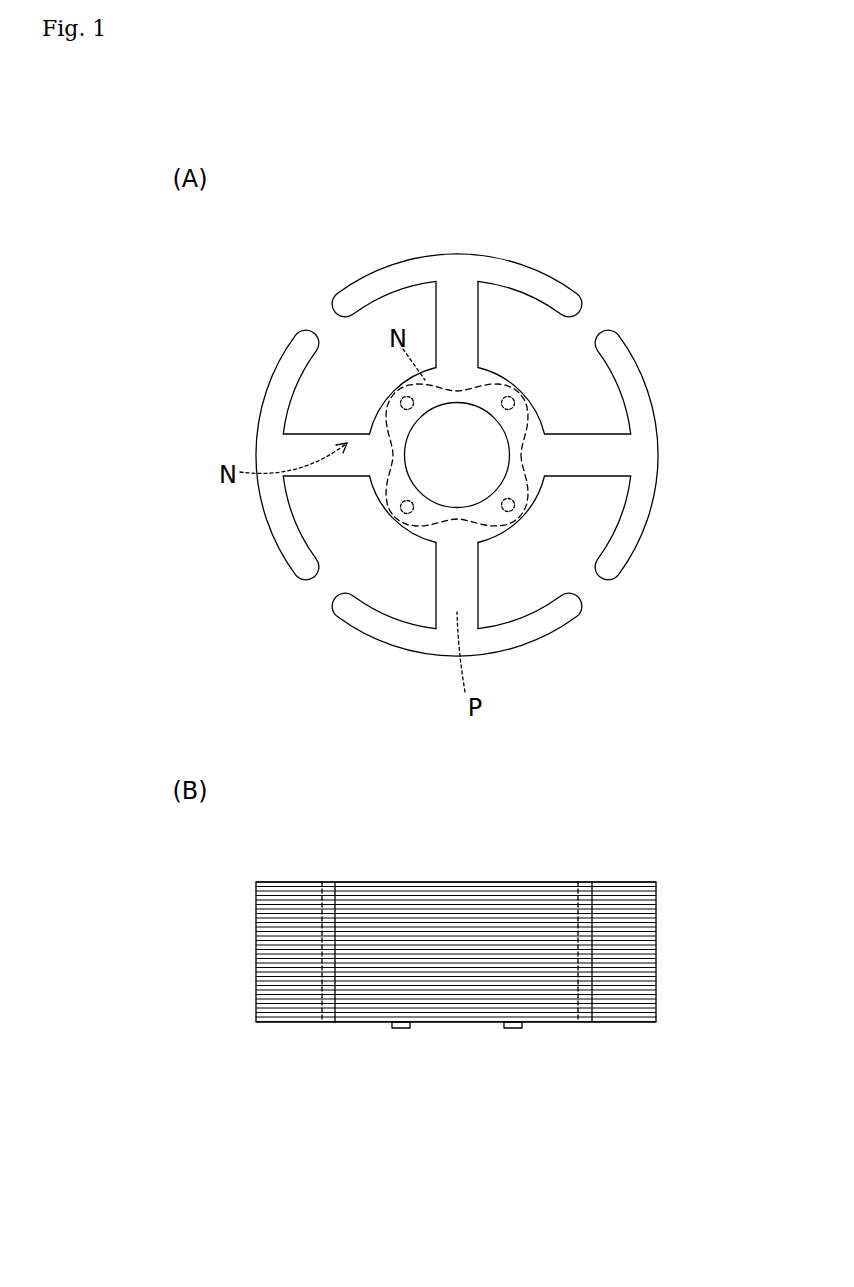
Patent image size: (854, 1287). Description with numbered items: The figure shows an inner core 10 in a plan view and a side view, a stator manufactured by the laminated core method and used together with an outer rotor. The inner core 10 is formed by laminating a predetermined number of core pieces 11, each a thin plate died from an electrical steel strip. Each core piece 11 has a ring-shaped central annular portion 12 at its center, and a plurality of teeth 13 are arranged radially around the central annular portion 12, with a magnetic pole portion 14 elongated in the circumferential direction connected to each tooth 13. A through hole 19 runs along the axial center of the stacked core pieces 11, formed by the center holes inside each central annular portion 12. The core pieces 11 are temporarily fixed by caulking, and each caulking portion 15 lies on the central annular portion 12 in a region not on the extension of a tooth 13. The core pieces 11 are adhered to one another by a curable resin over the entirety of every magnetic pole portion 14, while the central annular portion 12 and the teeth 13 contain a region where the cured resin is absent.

The inner core 10 is at (477, 662).
The core piece 11 is at (477, 662).
The central annular portion 12 is at (515, 542).
The teeth 13 is at (442, 305).
The magnetic pole portion 14 is at (478, 283).
The caulking portion 15 is at (402, 398).
The through hole 19 is at (497, 425).